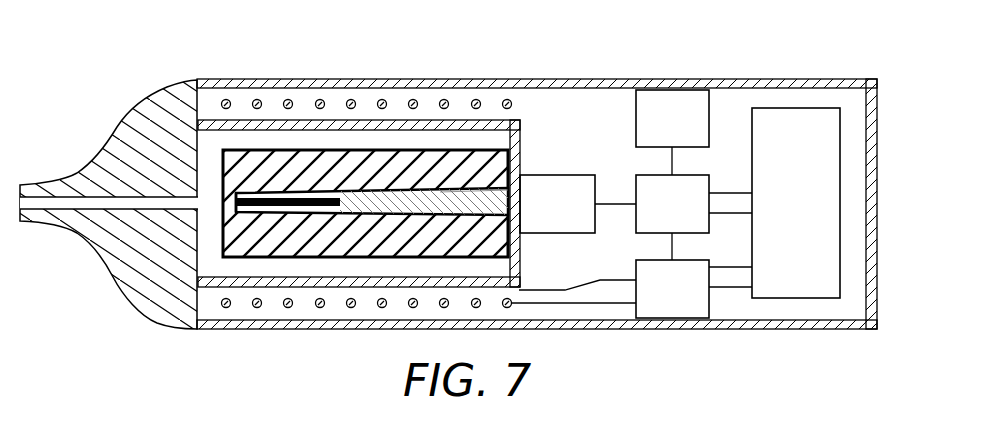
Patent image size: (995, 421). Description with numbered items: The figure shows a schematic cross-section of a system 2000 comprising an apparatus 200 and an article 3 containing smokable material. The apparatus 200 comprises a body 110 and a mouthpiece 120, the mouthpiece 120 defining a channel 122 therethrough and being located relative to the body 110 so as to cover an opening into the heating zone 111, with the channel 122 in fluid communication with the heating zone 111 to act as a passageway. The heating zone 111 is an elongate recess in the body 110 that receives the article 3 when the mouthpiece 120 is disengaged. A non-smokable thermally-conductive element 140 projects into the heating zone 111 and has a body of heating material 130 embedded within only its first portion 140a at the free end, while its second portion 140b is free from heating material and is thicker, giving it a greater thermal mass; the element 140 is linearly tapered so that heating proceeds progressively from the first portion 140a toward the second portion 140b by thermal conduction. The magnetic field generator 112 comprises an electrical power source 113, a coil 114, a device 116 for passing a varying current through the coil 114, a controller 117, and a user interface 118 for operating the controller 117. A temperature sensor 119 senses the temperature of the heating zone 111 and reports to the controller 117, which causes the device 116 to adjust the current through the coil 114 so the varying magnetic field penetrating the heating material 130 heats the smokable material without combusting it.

The system 2000 is at (832, 55).
The apparatus 200 is at (442, 52).
The body 110 is at (573, 79).
The magnetic field generator 112 is at (733, 99).
The mouthpiece 120 is at (117, 122).
The channel 122 is at (116, 205).
The coil 114 is at (226, 100).
The heating zone 111 is at (272, 138).
The article 3 is at (334, 162).
The body of heating material 130 is at (250, 207).
The thermally-conductive element 140 is at (358, 210).
The first portion of the element 140a is at (223, 258).
The second portion of the element 140b is at (471, 204).
The temperature sensor 119 is at (557, 204).
The user interface 118 is at (672, 118).
The controller 117 is at (672, 204).
The device for passing a varying electrical current 116 is at (672, 289).
The electrical power source 113 is at (796, 203).